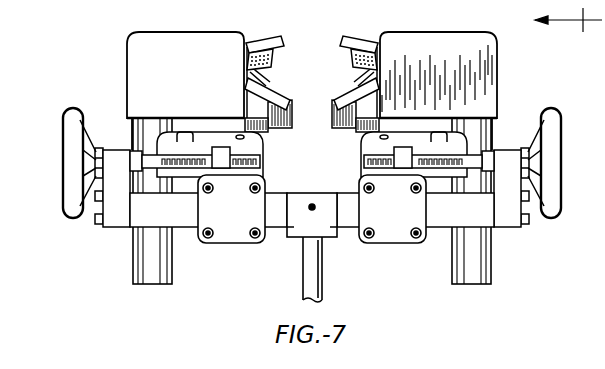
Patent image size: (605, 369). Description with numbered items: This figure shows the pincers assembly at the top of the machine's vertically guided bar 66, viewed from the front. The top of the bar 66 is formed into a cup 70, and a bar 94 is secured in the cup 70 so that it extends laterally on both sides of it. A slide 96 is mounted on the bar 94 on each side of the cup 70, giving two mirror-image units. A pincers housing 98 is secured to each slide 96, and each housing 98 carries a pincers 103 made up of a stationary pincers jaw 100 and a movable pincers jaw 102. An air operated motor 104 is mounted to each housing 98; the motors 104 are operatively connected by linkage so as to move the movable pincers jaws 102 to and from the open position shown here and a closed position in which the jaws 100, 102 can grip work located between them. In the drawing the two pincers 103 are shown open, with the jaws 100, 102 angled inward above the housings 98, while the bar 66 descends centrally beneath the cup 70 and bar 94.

The bar 66 is at (313, 271).
The cup 70 is at (298, 237).
The bar 94 is at (279, 200).
The slide 96 is at (239, 235).
The pincers housing 98 is at (178, 48).
The stationary pincers jaw 100 is at (350, 92).
The movable pincers jaw 102 is at (354, 62).
The pincers 103 is at (350, 33).
The air operated motor 104 is at (150, 262).